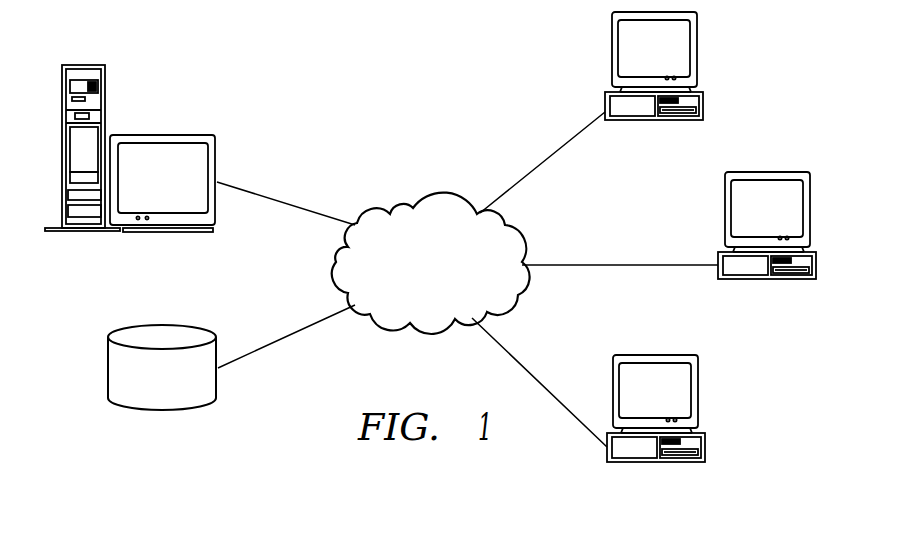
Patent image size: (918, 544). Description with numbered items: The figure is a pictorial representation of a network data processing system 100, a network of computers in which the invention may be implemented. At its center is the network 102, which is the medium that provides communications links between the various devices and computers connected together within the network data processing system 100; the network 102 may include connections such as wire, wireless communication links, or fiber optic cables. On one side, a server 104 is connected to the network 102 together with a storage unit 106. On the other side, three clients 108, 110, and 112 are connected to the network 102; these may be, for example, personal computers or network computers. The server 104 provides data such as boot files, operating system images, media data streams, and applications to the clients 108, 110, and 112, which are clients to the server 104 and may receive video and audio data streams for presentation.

The network data processing system 100 is at (300, 55).
The network 102 is at (448, 290).
The server 104 is at (105, 90).
The storage unit 106 is at (108, 367).
The client 108 is at (697, 57).
The client 110 is at (810, 213).
The client 112 is at (698, 395).